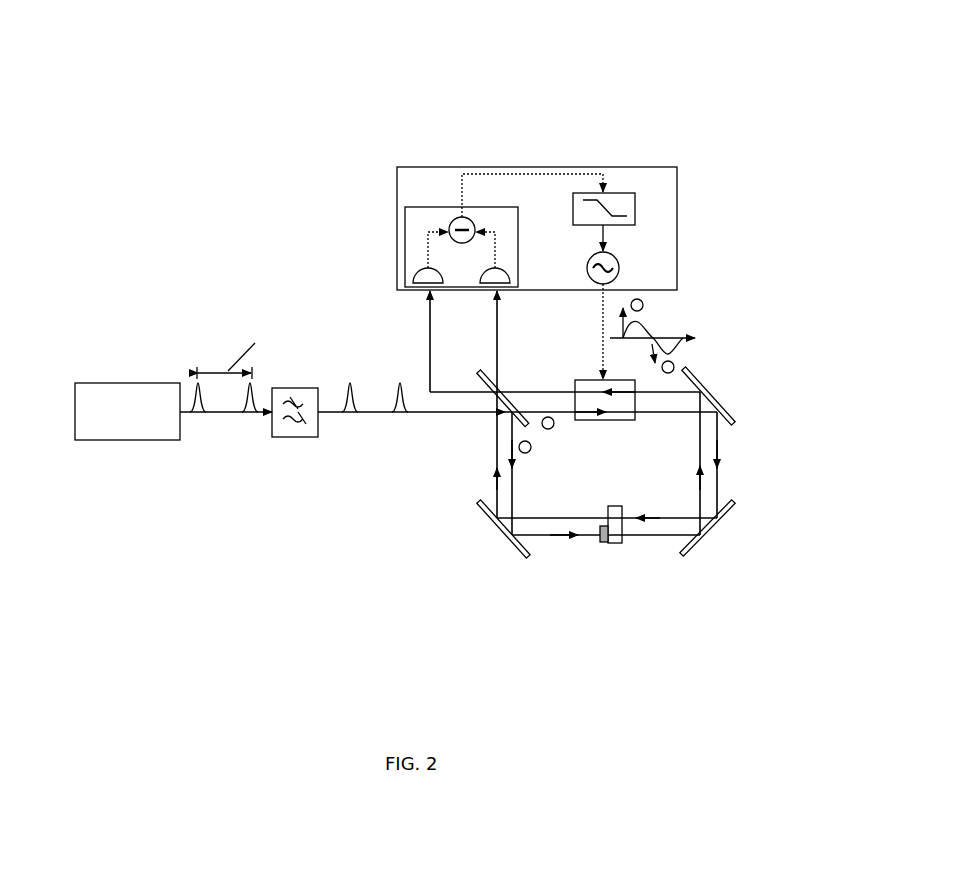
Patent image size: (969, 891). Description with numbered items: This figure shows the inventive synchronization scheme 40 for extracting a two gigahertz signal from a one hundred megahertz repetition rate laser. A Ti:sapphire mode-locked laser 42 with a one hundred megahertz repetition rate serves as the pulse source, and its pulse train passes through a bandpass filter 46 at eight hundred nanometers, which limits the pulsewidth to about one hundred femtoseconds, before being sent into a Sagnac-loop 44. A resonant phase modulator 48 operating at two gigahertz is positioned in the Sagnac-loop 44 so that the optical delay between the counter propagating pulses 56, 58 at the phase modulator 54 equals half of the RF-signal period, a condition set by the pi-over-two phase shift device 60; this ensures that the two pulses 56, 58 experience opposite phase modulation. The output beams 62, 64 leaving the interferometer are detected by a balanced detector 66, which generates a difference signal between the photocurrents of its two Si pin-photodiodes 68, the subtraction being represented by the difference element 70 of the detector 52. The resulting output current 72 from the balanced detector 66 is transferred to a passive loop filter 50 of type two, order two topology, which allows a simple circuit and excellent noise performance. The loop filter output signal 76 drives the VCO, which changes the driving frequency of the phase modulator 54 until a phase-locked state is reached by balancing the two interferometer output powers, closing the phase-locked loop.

The synchronization scheme 40 is at (85, 77).
The Ti:sapphire mode-locked laser 42 is at (125, 382).
The Sagnac-loop 44 is at (403, 163).
The bandpass filter 46 is at (320, 441).
The resonant phase modulator 48 is at (591, 276).
The passive loop filter 50 is at (582, 192).
The balanced detector 52 is at (420, 179).
The phase modulator 54 is at (634, 378).
The counter propagating pulse 56 is at (481, 506).
The counter propagating pulse 58 is at (624, 396).
The π/2 phase shift device 60 is at (623, 544).
The output beam 62 is at (491, 360).
The output beam 64 is at (421, 302).
The balanced detector 66 is at (415, 216).
The Si pin-photodiodes 68 is at (428, 270).
The subtractor 70 is at (463, 216).
The output current 72 is at (597, 172).
The loop filter output signal 76 is at (611, 227).